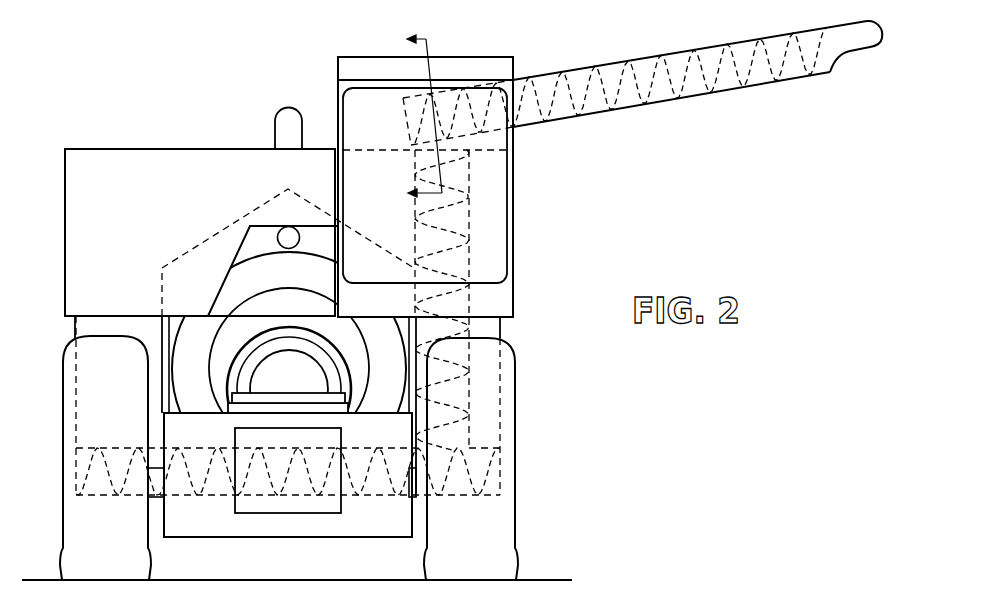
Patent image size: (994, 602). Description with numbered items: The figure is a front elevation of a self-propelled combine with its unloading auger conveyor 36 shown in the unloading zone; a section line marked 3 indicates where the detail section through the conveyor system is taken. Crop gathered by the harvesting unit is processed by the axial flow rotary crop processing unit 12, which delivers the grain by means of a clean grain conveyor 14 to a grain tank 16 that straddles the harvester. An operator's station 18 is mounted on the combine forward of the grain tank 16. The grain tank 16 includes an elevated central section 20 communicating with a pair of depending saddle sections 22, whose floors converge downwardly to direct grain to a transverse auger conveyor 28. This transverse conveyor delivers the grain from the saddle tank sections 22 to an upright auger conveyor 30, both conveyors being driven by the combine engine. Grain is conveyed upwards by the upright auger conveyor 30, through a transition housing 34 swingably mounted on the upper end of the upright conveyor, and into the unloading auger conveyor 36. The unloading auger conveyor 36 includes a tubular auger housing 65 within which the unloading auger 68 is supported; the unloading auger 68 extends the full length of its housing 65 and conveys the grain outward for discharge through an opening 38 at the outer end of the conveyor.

The section line 3- 3 is at (414, 111).
The axial flow rotary crop processing unit 12 is at (298, 317).
The clean grain conveyor 14 is at (283, 108).
The grain tank 16 is at (120, 146).
The operator's station 18 is at (514, 206).
The elevated central section 20 is at (157, 190).
The saddle sections 22 is at (75, 331).
The transverse auger conveyor 28 is at (186, 497).
The upright auger conveyor 30 is at (406, 218).
The transition housing 34 is at (396, 112).
The unloading auger conveyor 36 is at (648, 74).
The opening 38 is at (851, 50).
The auger housing 65 is at (612, 63).
The unloading auger 68 is at (624, 107).